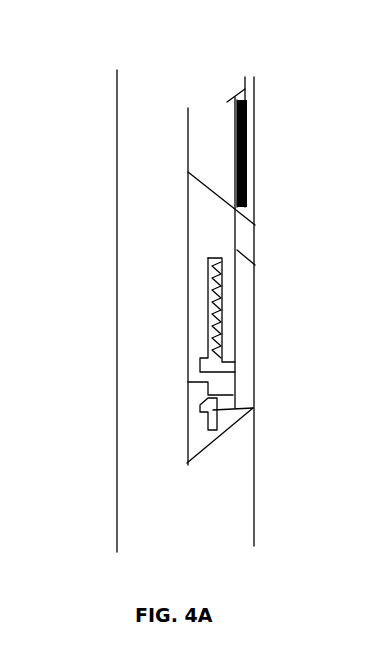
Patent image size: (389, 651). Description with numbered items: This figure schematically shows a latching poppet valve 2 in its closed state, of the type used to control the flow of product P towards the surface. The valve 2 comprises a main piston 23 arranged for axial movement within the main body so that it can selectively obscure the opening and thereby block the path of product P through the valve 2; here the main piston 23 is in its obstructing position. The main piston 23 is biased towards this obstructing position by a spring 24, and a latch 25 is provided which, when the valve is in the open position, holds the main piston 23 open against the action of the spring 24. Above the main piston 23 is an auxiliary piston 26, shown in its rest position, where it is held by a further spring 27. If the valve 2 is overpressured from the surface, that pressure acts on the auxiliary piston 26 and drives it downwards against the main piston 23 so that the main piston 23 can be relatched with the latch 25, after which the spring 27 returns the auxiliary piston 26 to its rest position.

The valve 2 is at (273, 155).
The main piston 23 is at (213, 212).
The spring 24 is at (218, 351).
The latch 25 is at (255, 412).
The auxiliary piston 26 is at (226, 98).
The spring 27 is at (242, 122).
The product P is at (249, 237).